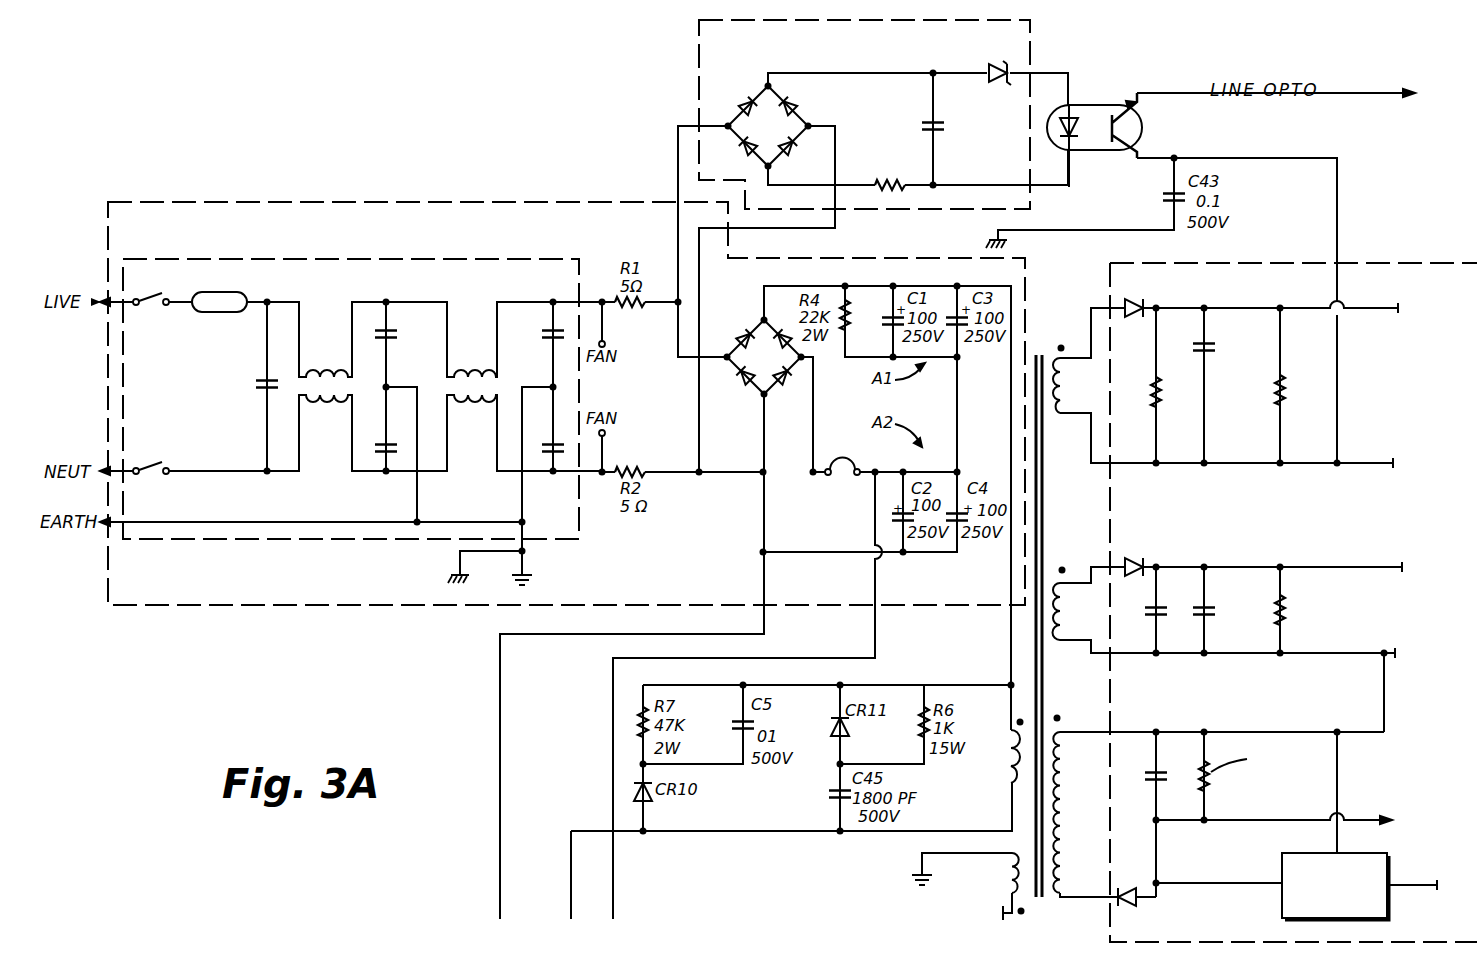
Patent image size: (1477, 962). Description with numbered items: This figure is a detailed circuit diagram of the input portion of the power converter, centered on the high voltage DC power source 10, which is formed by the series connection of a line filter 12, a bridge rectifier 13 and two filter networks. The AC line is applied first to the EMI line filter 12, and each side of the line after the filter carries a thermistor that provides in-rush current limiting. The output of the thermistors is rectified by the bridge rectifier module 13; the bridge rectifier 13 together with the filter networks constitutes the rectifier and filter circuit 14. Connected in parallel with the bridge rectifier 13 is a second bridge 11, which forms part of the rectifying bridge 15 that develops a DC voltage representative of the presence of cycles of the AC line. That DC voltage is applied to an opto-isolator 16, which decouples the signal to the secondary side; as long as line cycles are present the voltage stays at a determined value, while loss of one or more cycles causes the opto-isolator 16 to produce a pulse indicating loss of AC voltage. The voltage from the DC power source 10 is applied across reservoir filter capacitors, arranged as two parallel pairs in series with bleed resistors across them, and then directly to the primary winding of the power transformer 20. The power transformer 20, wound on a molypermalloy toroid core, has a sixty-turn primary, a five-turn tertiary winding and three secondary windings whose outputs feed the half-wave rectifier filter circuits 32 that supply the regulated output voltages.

The high voltage DC power source 10 is at (341, 201).
The bridge 11 is at (745, 108).
The line filter 12 is at (414, 259).
The bridge rectifier 13 is at (763, 373).
The rectifier and filter circuit 14 is at (745, 390).
The rectifying bridge 15 is at (698, 41).
The opto-isolator 16 is at (1096, 103).
The power transformer 20 is at (1060, 332).
The half-wave rectifier filter circuits 32 is at (1385, 262).